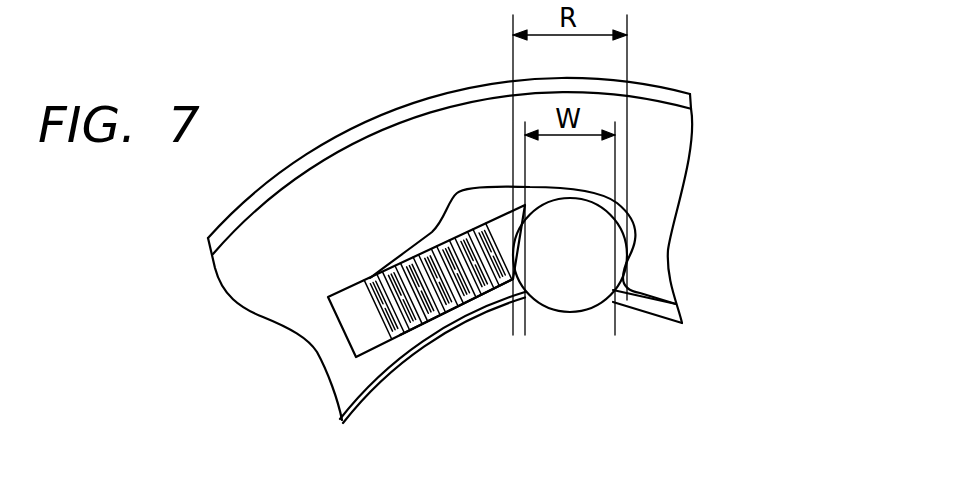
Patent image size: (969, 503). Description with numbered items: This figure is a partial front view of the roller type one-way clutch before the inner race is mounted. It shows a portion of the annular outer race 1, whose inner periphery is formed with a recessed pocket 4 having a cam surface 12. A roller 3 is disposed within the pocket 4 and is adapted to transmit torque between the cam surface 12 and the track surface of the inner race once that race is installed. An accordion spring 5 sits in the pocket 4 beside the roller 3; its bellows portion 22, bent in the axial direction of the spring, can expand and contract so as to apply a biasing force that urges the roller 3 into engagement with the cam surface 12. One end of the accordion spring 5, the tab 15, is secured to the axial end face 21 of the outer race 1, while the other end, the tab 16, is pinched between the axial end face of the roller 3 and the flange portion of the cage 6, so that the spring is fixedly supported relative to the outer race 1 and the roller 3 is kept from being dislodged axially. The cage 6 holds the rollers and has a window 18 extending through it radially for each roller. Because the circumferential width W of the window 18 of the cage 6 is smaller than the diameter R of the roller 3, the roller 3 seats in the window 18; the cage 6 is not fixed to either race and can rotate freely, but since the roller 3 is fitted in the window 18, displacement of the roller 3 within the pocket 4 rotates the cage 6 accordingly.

The outer race 1 is at (237, 272).
The axial end face 21 is at (277, 312).
The pocket 4 is at (457, 212).
The cam surface 12 is at (588, 198).
The window 18 is at (613, 300).
The cage 6 is at (390, 368).
The bellows portion 22 is at (442, 323).
The tab 15 is at (347, 297).
The tab 16 is at (507, 222).
The accordion spring 5 is at (463, 310).
The roller 3 is at (558, 303).